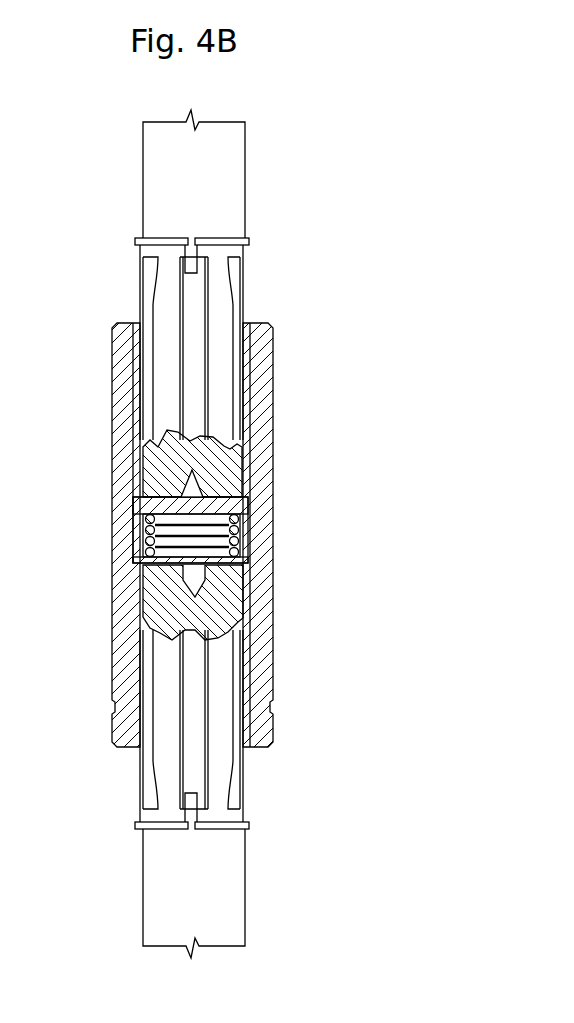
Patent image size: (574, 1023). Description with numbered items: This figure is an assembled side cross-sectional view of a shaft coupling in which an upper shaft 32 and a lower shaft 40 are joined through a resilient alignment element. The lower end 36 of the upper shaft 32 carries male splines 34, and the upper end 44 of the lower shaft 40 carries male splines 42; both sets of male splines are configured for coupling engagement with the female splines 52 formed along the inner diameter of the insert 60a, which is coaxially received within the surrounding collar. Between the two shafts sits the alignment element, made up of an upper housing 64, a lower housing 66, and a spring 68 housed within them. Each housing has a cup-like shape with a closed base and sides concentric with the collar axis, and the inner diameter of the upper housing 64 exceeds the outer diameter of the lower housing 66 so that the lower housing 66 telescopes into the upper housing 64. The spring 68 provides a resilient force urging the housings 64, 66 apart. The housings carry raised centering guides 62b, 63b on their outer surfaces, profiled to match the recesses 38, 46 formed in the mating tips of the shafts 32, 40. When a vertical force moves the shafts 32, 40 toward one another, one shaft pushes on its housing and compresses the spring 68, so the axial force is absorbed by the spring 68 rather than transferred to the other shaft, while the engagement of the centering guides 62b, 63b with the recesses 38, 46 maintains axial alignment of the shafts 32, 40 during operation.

The upper shaft 32 is at (208, 198).
The male splines 34 is at (238, 302).
The lower end 36 is at (112, 277).
The recess 38 is at (202, 477).
The lower shaft 40 is at (208, 894).
The male splines 42 is at (240, 763).
The upper end 44 is at (124, 793).
The recess 46 is at (195, 598).
The female splines 52 is at (213, 373).
The insert 60a is at (248, 391).
The centering guide 62b is at (200, 496).
The centering guide 63b is at (202, 574).
The upper housing 64 is at (142, 512).
The lower housing 66 is at (236, 561).
The spring 68 is at (245, 527).